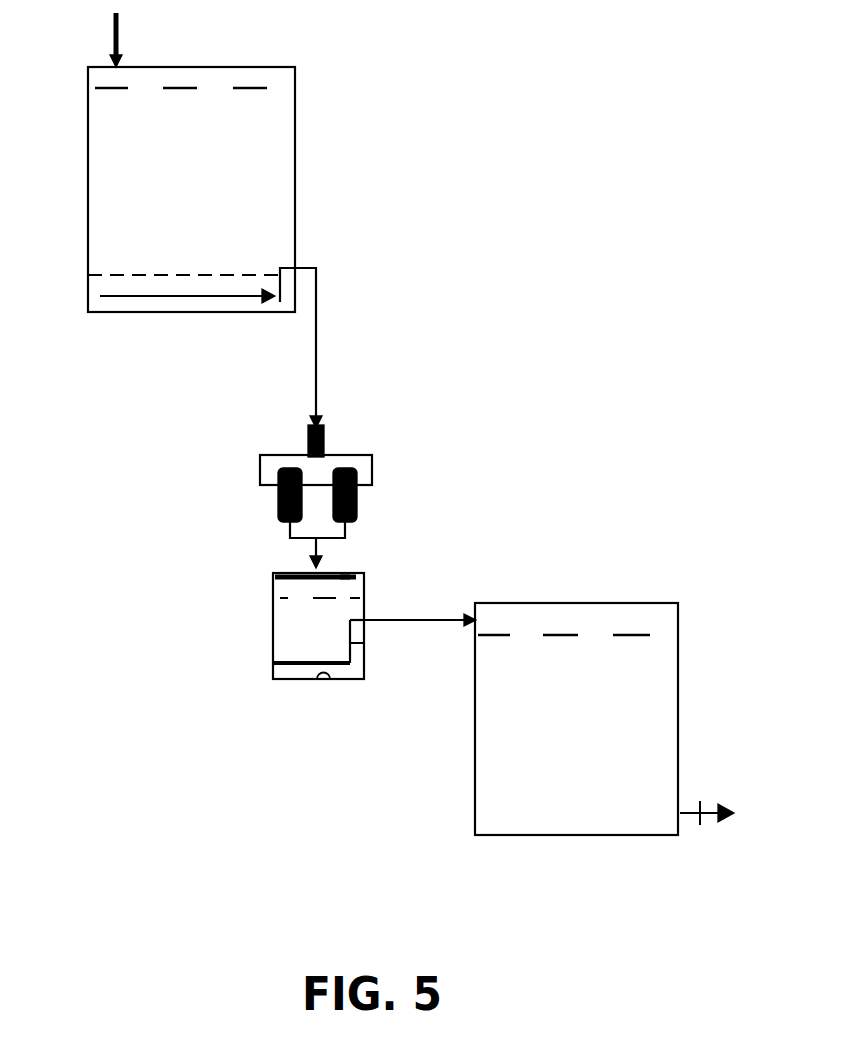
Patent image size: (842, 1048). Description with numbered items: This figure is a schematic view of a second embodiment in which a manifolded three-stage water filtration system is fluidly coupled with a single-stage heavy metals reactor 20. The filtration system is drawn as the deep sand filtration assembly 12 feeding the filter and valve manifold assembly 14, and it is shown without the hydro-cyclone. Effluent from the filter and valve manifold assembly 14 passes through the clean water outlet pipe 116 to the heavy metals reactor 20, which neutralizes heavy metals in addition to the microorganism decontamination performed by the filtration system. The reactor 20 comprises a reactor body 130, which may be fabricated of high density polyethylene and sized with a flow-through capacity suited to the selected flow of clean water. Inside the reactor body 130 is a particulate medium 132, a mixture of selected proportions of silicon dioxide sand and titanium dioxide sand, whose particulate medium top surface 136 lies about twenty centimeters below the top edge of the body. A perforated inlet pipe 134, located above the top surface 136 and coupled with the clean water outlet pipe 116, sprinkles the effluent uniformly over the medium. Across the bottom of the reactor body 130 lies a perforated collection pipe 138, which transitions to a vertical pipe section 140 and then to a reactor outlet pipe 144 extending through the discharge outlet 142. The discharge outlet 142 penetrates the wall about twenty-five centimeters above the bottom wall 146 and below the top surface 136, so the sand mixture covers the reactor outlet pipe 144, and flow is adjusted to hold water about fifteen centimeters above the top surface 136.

The deep sand filtration assembly 12 is at (310, 173).
The filter and valve manifold assembly 14 is at (378, 464).
The heavy metals reactor 20 is at (331, 650).
The clean water outlet pipe 116 is at (314, 551).
The reactor body 130 is at (273, 617).
The particulate medium 132 is at (274, 666).
The perforated inlet pipe 134 is at (352, 591).
The particulate medium top surface 136 is at (276, 582).
The perforated collection pipe 138 is at (293, 632).
The vertical pipe section 140 is at (352, 650).
The discharge outlet 142 is at (366, 617).
The reactor outlet pipe 144 is at (436, 625).
The bottom wall 146 is at (324, 680).